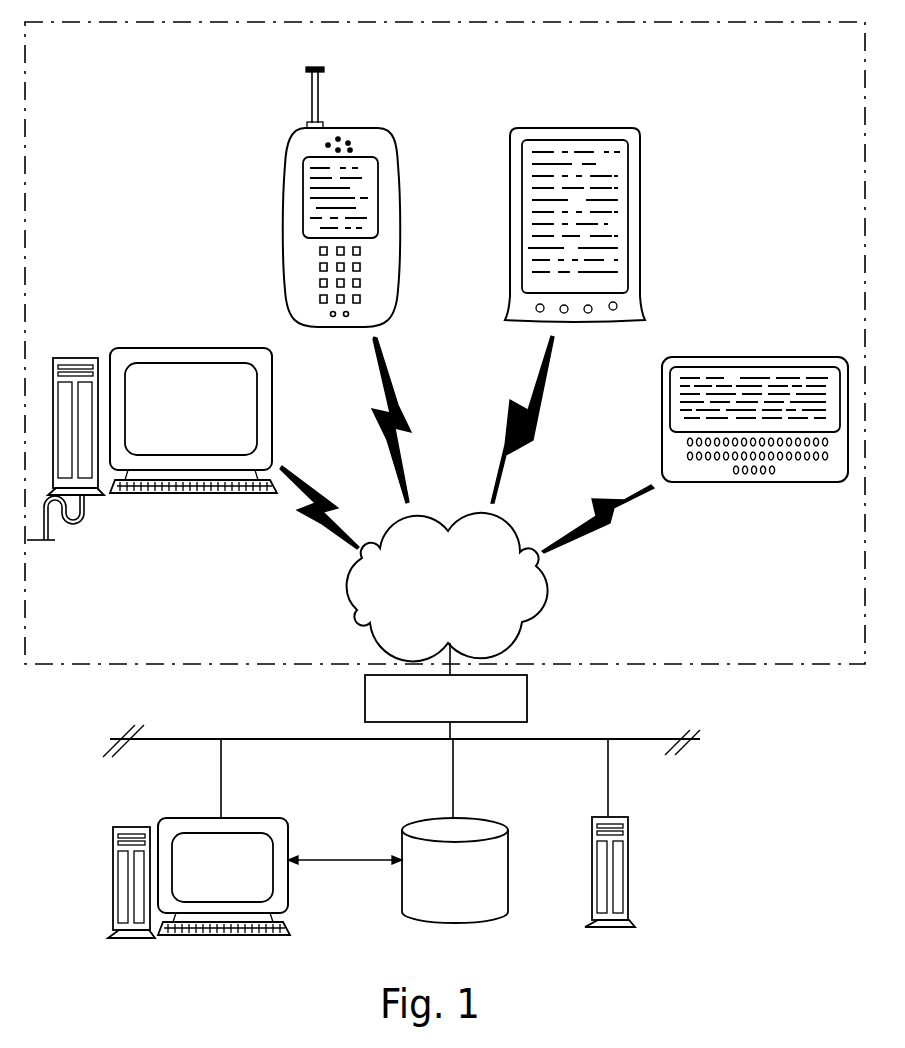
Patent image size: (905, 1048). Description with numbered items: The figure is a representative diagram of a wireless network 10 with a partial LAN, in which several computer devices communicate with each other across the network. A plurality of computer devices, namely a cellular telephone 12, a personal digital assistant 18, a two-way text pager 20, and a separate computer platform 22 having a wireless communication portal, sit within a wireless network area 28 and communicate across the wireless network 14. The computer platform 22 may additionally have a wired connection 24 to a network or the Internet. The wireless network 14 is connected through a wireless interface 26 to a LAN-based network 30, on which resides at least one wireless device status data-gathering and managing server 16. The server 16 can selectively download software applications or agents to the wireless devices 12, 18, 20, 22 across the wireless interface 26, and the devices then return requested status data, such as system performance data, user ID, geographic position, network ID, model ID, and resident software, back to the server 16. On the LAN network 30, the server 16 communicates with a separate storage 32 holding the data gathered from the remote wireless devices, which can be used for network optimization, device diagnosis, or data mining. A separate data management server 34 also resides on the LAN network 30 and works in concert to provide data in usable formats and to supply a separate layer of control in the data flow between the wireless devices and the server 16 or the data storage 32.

The wireless network 10 is at (755, 203).
The cellular telephone 12 is at (393, 130).
The wireless network 14 is at (547, 585).
The server 16 is at (195, 818).
The personal digital assistant 18 is at (577, 128).
The two-way text pager 20 is at (787, 482).
The computer platform 22 is at (180, 348).
The wired connection 24 is at (90, 529).
The wireless interface 26 is at (527, 700).
The wireless network area 28 is at (735, 665).
The LAN-based network 30 is at (245, 738).
The storage 32 is at (400, 872).
The data management server 34 is at (628, 848).